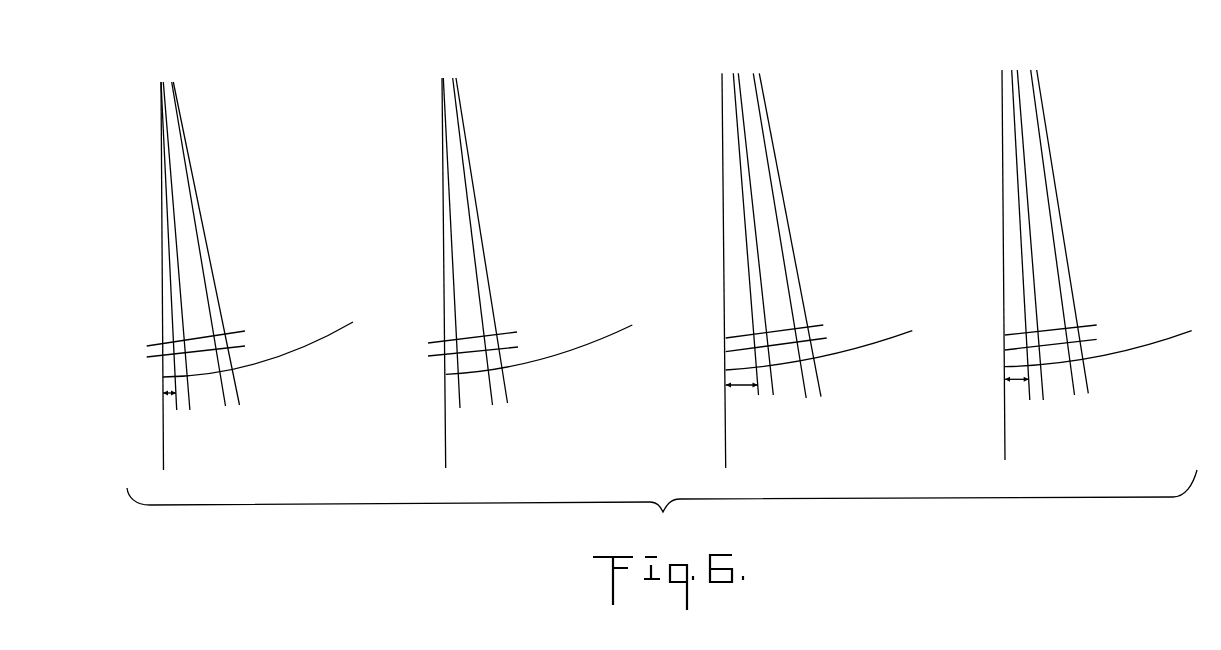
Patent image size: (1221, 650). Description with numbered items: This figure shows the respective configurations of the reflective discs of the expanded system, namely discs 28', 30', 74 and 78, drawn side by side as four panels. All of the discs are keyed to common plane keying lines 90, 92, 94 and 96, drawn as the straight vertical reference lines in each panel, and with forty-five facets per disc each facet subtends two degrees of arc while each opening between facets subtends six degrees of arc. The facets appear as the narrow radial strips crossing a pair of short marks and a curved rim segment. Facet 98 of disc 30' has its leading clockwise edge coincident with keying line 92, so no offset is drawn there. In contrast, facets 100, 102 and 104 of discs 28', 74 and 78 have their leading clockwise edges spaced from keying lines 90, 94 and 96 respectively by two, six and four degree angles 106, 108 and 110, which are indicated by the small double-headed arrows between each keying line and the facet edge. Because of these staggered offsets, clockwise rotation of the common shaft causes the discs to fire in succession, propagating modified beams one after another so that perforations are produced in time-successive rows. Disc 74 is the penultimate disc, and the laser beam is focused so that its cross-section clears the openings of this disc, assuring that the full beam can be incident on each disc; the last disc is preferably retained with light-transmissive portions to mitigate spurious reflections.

The disc 28' is at (230, 279).
The disc 30' is at (516, 273).
The disc 74 is at (862, 140).
The disc 78 is at (1136, 126).
The keying line 90 is at (163, 461).
The keying line 92 is at (445, 420).
The keying line 94 is at (725, 440).
The keying line 96 is at (1004, 443).
The facet 98 is at (451, 342).
The facet 100 is at (178, 342).
The facet 102 is at (758, 337).
The facet 104 is at (1030, 332).
The angle 106 is at (170, 394).
The angle 108 is at (742, 388).
The angle 110 is at (1012, 384).